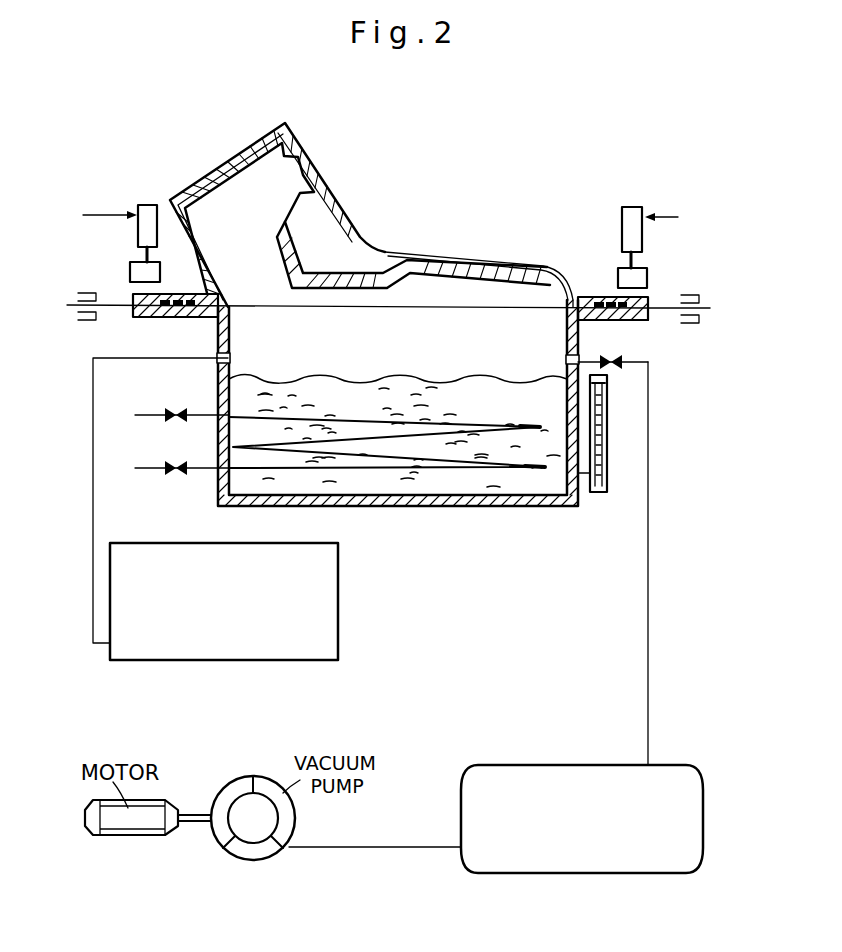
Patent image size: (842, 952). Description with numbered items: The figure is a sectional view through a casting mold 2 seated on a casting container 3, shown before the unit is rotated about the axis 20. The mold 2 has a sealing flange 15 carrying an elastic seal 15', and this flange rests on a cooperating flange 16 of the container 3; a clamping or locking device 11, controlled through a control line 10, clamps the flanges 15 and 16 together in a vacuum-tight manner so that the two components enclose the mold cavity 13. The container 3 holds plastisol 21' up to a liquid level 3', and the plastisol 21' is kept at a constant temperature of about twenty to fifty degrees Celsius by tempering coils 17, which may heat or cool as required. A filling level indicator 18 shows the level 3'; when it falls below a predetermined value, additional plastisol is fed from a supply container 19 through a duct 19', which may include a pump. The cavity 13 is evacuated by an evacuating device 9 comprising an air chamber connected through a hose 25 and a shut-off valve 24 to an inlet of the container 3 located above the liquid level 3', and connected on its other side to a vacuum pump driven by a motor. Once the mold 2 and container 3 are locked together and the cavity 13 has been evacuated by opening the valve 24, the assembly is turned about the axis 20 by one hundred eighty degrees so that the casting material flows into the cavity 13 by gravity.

The casting mold 2 is at (409, 244).
The casting container 3 is at (398, 432).
The liquid level 3' is at (398, 359).
The evacuating device 9 is at (567, 785).
The control line 10 is at (106, 213).
The clamping or locking device 11 is at (130, 271).
The mold cavity 13 is at (230, 192).
The sealing flange 15 is at (422, 293).
The elastic seal 15' is at (393, 274).
The cooperating flange 16 is at (637, 320).
The tempering coils 17 is at (394, 457).
The filling level indicator 18 is at (608, 475).
The supply container 19 is at (249, 601).
The duct 19' is at (132, 500).
The axis 20 is at (663, 312).
The plastisol 21' is at (409, 413).
The shut off valve 24 is at (610, 367).
The hose 25 is at (650, 583).